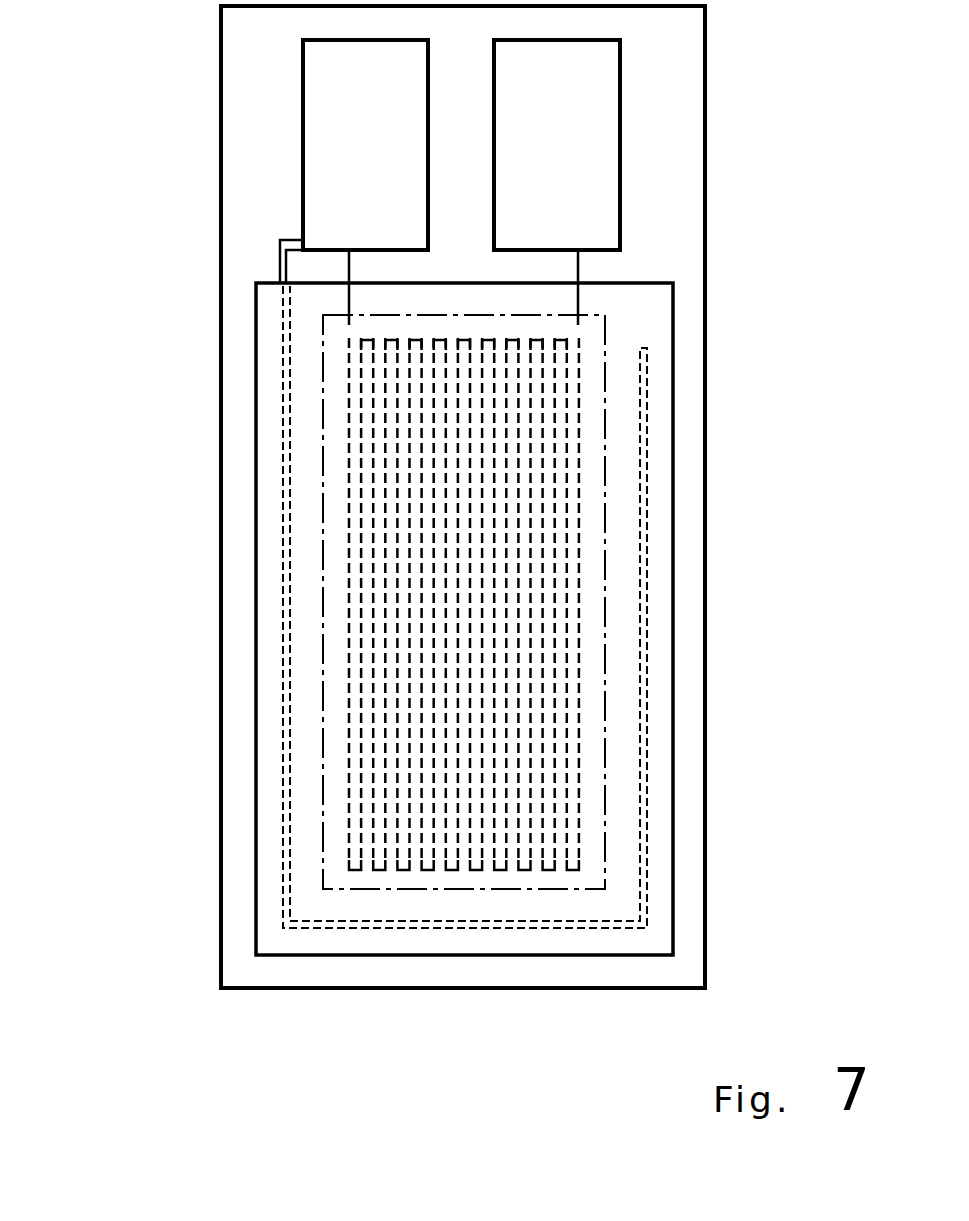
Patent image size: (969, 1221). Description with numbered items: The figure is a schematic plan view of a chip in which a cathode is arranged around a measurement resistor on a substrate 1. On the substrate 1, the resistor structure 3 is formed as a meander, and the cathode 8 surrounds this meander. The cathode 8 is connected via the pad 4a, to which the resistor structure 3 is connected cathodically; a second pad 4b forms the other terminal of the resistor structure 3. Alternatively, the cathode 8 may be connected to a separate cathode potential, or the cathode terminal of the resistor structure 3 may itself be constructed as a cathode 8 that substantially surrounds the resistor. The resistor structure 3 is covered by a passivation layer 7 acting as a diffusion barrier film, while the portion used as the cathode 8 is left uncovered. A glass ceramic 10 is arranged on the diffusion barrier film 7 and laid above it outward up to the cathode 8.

The substrate 1 is at (263, 108).
The resistor structure 3 is at (349, 340).
The pad 4a is at (322, 229).
The contact pad 4b is at (603, 226).
The passivation layer 7 is at (323, 467).
The cathode 8 is at (284, 587).
The glass ceramic 10 is at (256, 708).